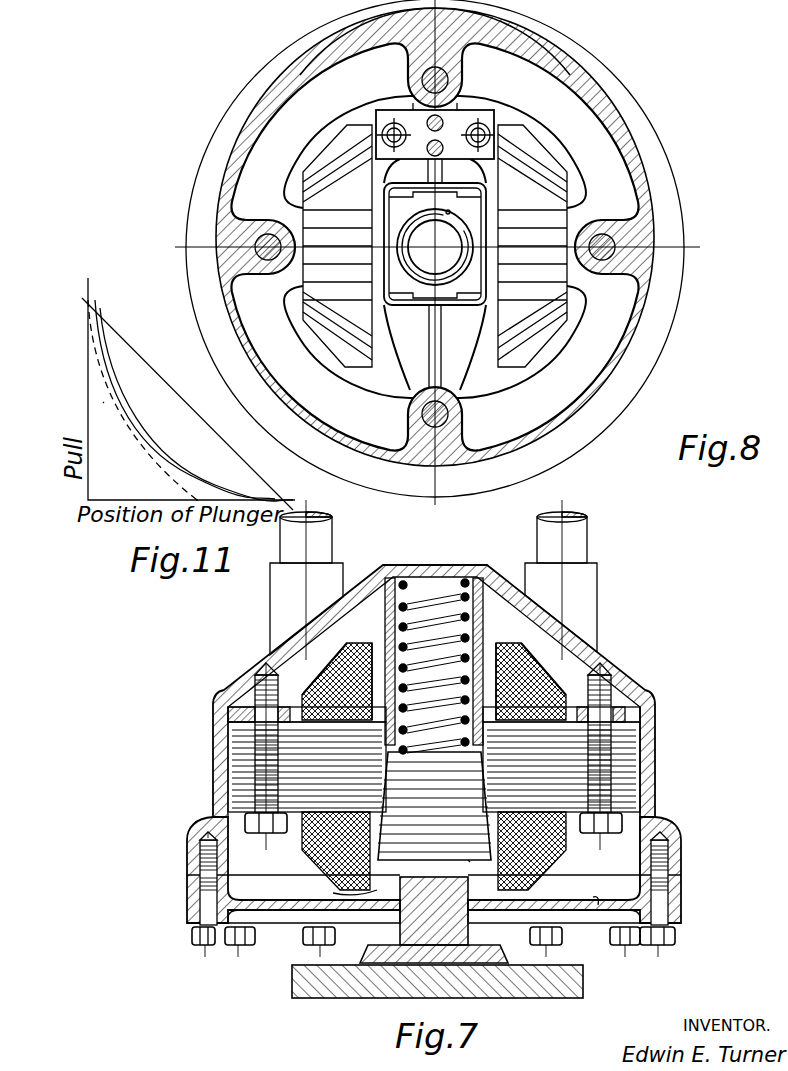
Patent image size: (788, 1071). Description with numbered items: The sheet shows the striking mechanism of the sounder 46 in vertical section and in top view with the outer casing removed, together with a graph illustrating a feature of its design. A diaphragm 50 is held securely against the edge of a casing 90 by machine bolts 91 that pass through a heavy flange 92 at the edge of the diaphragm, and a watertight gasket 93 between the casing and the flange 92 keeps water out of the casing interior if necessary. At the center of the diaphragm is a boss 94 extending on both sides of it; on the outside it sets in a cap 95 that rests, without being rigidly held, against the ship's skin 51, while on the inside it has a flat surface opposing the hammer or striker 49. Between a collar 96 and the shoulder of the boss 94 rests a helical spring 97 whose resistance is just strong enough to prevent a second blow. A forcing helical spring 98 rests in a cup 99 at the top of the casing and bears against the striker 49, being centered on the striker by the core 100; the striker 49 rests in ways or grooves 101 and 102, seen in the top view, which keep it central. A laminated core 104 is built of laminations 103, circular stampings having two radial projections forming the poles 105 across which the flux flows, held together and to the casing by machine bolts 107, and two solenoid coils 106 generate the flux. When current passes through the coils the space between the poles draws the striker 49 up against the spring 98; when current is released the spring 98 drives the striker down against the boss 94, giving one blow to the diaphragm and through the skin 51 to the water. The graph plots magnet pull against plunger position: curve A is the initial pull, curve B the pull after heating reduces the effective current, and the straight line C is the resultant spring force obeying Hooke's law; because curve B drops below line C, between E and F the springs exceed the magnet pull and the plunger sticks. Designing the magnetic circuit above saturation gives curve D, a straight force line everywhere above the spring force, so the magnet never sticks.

In FIG. 7, the sounder 46 is at (657, 790).
In FIG. 7, the hammer 49 is at (562, 847).
In FIG. 7, the diaphragm 50 is at (593, 897).
In FIG. 7, the ship's skin 51 is at (293, 985).
In FIG. 7, the casing 90 is at (215, 685).
In FIG. 7, the machine bolts 91 is at (192, 932).
In FIG. 7, the heavy flange 92 is at (682, 913).
In FIG. 7, the watertight gasket 93 is at (660, 878).
In FIG. 7, the boss 94 is at (400, 932).
In FIG. 7, the cap 95 is at (358, 958).
In FIG. 7, the collar 96 is at (468, 860).
In FIG. 7, the helical spring 97 is at (345, 891).
In FIG. 7, the forcing helical spring 98 is at (473, 576).
In FIG. 7, the cup 99 is at (387, 593).
In FIG. 7, the core 100 is at (545, 672).
In FIG. 8, the ways or grooves 101 is at (476, 195).
In FIG. 8, the ways or grooves 102 is at (470, 296).
In FIG. 7, the ways or grooves 102 is at (500, 810).
In FIG. 7, the laminations 103 is at (645, 760).
In FIG. 7, the laminated core 104 is at (642, 694).
In FIG. 7, the poles 105 is at (378, 660).
In FIG. 7, the solenoid coils 106 is at (333, 650).
In FIG. 7, the machine bolts 107 is at (247, 825).
In FIG. 11, the curve A is at (105, 320).
In FIG. 11, the curve B is at (95, 370).
In FIG. 11, the line C is at (105, 403).
In FIG. 11, the curve D is at (152, 367).
In FIG. 11, the point E is at (197, 500).
In FIG. 11, the point F is at (103, 402).